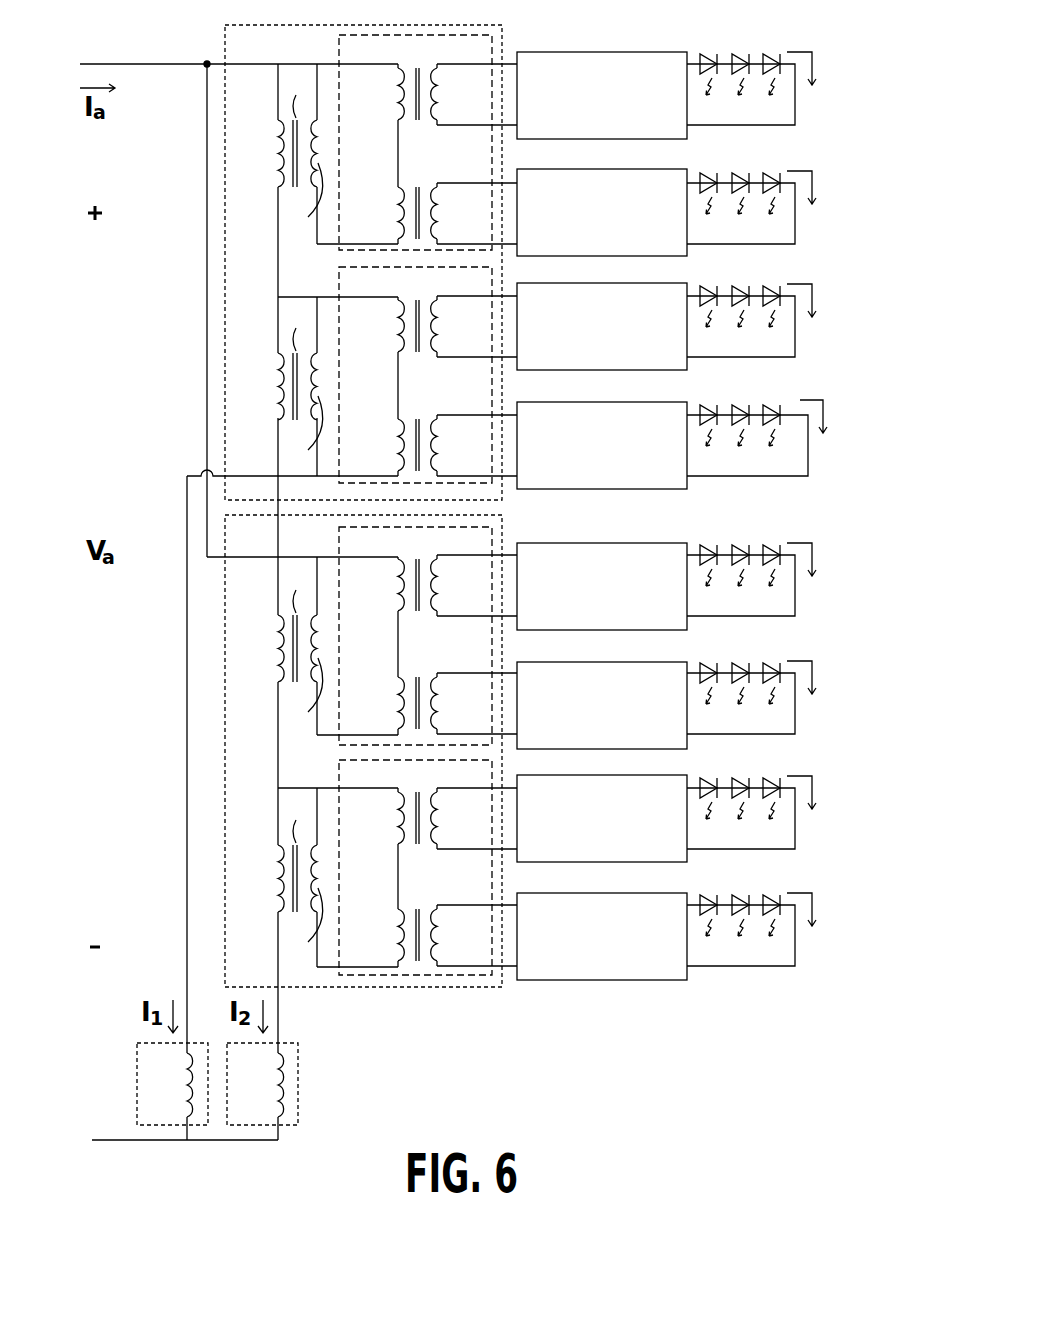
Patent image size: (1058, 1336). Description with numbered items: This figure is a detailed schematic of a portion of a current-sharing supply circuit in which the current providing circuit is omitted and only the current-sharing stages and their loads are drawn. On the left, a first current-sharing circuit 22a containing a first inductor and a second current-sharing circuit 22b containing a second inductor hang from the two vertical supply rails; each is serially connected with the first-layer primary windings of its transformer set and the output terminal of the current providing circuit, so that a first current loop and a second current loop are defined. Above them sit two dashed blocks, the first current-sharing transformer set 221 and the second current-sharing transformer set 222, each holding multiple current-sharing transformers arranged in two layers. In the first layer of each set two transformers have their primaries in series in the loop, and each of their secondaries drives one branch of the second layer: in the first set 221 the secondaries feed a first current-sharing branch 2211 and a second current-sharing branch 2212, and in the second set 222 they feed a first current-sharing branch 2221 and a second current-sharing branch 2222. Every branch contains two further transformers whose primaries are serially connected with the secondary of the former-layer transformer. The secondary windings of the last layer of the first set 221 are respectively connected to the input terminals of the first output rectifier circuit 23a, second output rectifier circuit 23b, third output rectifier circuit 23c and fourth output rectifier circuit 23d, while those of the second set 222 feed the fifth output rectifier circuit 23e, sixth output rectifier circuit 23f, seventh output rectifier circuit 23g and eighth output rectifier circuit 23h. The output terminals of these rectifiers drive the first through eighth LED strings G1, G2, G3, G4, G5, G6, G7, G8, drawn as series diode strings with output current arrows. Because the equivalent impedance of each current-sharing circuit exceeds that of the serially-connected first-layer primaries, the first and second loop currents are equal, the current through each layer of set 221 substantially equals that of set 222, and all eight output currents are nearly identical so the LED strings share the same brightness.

The first current-sharing transformer set 221 is at (225, 232).
The second current-sharing transformer set 222 is at (225, 790).
The first current-sharing branch 2211 is at (338, 51).
The second current-sharing branch 2212 is at (338, 285).
The first current-sharing branch 2221 is at (338, 545).
The second current-sharing branch 2222 is at (338, 777).
The first current-sharing circuit 22a is at (137, 1095).
The second current-sharing circuit 22b is at (298, 1086).
The first output rectifier circuit 23a is at (607, 52).
The second output rectifier circuit 23b is at (607, 171).
The third output rectifier circuit 23c is at (607, 284).
The fourth output rectifier circuit 23d is at (607, 403).
The fifth output rectifier circuit 23e is at (607, 543).
The sixth output rectifier circuit 23f is at (607, 661).
The seventh output rectifier circuit 23g is at (607, 776).
The eighth output rectifier circuit 23h is at (607, 893).
The first LED string G1 is at (718, 45).
The second LED string G2 is at (718, 164).
The third LED string G3 is at (718, 277).
The fourth LED string G4 is at (718, 396).
The fifth LED string G5 is at (718, 536).
The sixth LED string G6 is at (718, 654).
The seventh LED string G7 is at (718, 769).
The eighth LED string G8 is at (718, 886).